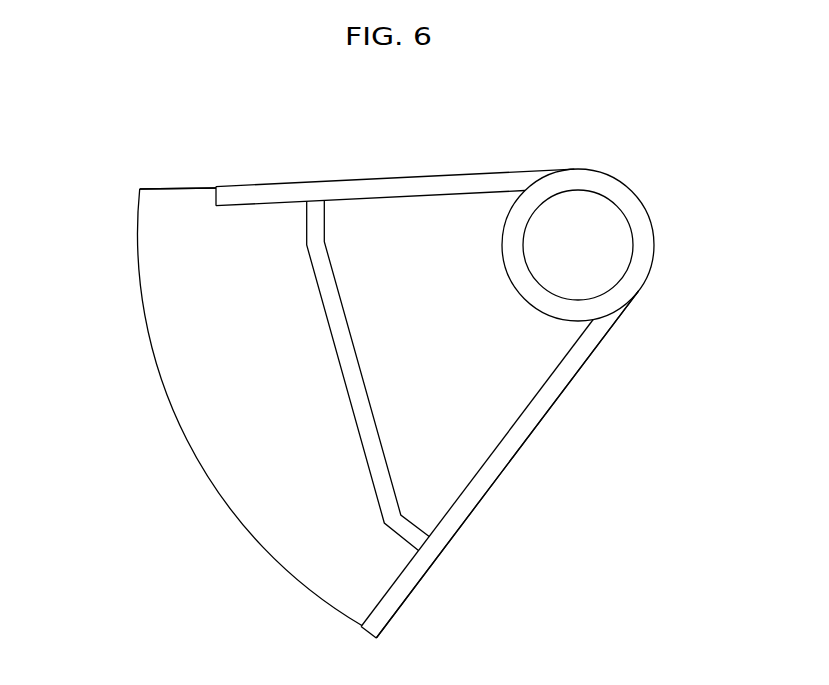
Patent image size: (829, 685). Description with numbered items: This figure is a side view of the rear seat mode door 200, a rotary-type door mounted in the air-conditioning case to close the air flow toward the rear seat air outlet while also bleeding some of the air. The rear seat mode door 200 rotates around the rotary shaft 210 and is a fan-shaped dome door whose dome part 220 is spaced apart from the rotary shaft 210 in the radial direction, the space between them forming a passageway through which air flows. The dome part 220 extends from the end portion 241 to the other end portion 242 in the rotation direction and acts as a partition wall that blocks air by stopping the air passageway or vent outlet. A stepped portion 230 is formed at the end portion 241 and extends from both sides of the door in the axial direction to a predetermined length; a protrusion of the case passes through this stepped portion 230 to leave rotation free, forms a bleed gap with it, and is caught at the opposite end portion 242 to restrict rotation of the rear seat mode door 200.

The rear seat mode door 200 is at (558, 452).
The rotary shaft 210 is at (622, 223).
The dome part 220 is at (145, 318).
The stepped portion 230 is at (213, 192).
The end portion 241 is at (270, 183).
The end portion 242 is at (420, 580).